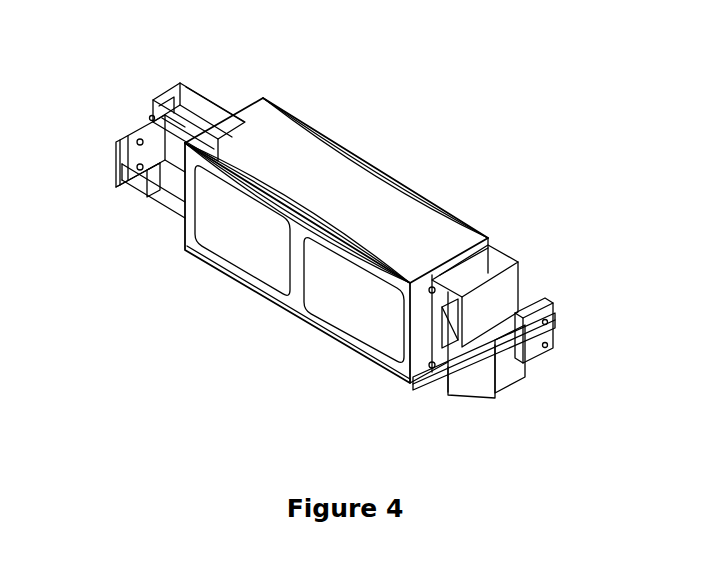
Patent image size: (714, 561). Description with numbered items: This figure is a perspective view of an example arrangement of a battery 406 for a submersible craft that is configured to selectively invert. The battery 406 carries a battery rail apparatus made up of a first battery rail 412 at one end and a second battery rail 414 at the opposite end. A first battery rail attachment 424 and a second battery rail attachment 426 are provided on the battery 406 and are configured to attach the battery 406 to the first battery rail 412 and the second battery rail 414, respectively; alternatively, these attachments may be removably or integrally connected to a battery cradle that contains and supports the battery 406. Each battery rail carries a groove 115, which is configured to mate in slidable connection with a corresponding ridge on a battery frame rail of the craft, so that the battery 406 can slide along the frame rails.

The battery 406 is at (379, 205).
The first battery rail attachment 424 is at (195, 93).
The first battery rail 412 is at (126, 135).
The groove 115 is at (122, 168).
The second battery rail attachment 426 is at (497, 280).
The second battery rail 414 is at (540, 347).